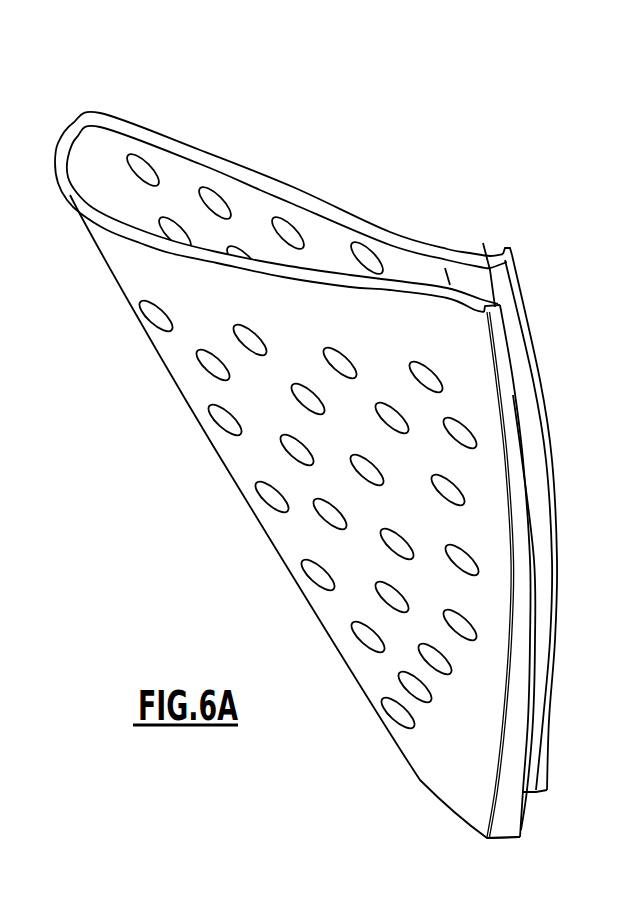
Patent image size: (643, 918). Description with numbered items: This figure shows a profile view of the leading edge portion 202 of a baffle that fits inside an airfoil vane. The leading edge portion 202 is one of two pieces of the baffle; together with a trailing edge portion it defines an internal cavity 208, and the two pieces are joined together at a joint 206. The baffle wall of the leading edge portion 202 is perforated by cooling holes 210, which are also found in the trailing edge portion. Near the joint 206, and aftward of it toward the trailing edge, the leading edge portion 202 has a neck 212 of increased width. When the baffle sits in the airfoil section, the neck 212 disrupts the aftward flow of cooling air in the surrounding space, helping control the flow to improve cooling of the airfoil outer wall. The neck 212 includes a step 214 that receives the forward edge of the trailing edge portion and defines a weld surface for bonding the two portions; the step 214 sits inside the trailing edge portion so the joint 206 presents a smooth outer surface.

The leading edge portion 202 is at (290, 140).
The joint 206 is at (533, 240).
The internal cavity 208 is at (118, 130).
The cooling holes 210 is at (158, 318).
The neck 212 is at (483, 243).
The step 214 is at (502, 362).